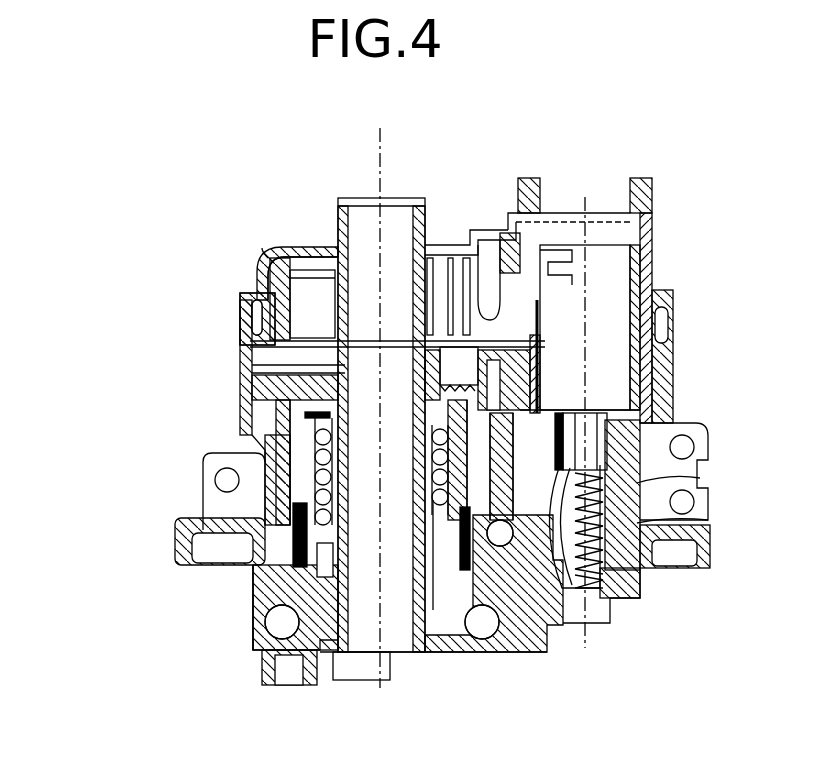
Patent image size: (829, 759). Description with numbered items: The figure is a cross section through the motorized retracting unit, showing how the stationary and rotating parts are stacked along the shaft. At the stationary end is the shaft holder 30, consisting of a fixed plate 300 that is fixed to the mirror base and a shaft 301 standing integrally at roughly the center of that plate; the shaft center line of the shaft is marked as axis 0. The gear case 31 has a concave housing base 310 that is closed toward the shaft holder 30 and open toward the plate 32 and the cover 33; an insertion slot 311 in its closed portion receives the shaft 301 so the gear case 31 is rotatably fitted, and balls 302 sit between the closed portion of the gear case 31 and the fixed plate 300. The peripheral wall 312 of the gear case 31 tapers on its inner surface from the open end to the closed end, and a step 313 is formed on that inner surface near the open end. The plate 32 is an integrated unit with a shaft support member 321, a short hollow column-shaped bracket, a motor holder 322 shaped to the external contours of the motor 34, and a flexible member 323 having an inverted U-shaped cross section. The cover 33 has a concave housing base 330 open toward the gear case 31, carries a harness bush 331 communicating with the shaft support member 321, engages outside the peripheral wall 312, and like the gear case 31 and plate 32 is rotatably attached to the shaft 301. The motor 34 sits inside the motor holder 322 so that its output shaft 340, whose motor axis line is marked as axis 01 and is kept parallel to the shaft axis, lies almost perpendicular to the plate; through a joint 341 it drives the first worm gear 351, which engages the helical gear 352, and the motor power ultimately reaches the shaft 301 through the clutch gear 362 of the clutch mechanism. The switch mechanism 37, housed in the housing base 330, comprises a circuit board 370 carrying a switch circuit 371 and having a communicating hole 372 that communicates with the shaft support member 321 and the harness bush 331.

The shaft center 0 is at (366, 407).
The motor axis 01 is at (585, 424).
The shaft holder 30 is at (262, 668).
The gear case 31 is at (254, 432).
The plate 32 is at (264, 392).
The cover 33 is at (260, 262).
The motor 34 is at (603, 297).
The switch mechanism 37 is at (262, 285).
The fixed plate 300 is at (447, 647).
The shaft 301 is at (253, 610).
The balls 302 is at (497, 645).
The housing base 310 is at (293, 468).
The insertion slot 311 is at (257, 587).
The peripheral wall 312 is at (660, 380).
The step 313 is at (677, 420).
The shaft support member 321 is at (260, 365).
The motor holder 322 is at (653, 287).
The flexible member 323 is at (530, 337).
The housing base 330 is at (262, 272).
The harness bush 331 is at (430, 213).
The output shaft 340 is at (603, 410).
The joint 341 is at (683, 425).
The first worm gear 351 is at (637, 473).
The helical gear 352 is at (600, 547).
The clutch gear 362 is at (175, 547).
The circuit board 370 is at (240, 293).
The switch circuit 371 is at (258, 252).
The communicating hole 372 is at (290, 291).